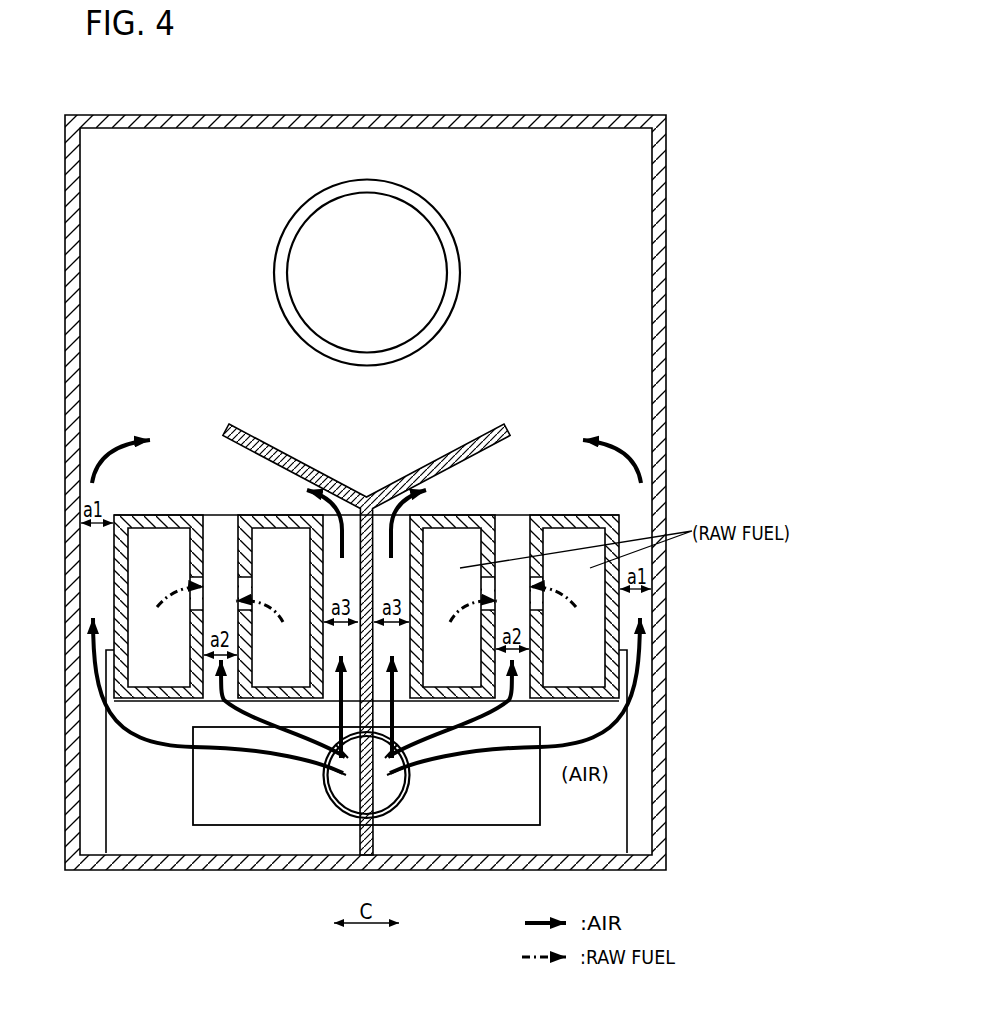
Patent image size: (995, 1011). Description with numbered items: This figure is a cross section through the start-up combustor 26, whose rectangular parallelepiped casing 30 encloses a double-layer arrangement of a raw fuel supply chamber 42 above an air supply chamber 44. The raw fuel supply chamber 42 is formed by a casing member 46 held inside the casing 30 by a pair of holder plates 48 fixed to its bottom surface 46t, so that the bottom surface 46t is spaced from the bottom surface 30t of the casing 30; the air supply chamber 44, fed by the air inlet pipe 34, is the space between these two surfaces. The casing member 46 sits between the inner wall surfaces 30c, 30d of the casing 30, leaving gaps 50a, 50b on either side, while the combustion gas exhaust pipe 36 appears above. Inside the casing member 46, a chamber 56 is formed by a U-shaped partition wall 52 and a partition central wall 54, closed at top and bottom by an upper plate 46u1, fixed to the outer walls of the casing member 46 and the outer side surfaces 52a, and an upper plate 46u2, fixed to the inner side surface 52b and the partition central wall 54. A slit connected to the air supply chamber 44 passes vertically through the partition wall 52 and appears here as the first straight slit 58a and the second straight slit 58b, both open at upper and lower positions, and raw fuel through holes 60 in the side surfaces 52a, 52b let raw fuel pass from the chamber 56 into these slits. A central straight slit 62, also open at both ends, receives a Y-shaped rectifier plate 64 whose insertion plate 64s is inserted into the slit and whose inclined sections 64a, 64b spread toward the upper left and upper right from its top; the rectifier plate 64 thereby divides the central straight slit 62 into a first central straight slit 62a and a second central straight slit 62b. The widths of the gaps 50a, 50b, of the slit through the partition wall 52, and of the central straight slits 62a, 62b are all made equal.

The start-up combustor 26 is at (619, 69).
The casing 30 is at (273, 102).
The inner wall surface 30c is at (653, 642).
The inner wall surface 30d is at (73, 650).
The bottom surface of the casing 30t is at (136, 853).
The air inlet pipe 34 is at (327, 779).
The combustion gas exhaust pipe 36 is at (427, 250).
The raw fuel supply chamber 42 is at (218, 478).
The air supply chamber 44 is at (167, 830).
The casing member 46 is at (622, 497).
The bottom surface of the casing member 46t is at (153, 702).
The upper plate 46u1 is at (143, 520).
The upper plate 46u2 is at (273, 523).
The holder plates 48 is at (628, 805).
The gap 50a is at (640, 604).
The gap 50b is at (88, 580).
The partition wall 52 is at (218, 555).
The outer side surface of the partition wall 52a is at (175, 520).
The inner side surface of the partition wall 52b is at (253, 548).
The partition central wall 54 is at (514, 587).
The chamber 56 is at (148, 552).
The first straight slit 58a is at (518, 694).
The second straight slit 58b is at (218, 700).
The raw fuel through holes 60 is at (531, 598).
The central straight slit 62 is at (410, 425).
The first central straight slit 62a is at (393, 523).
The second central straight slit 62b is at (340, 523).
The rectifier plate 64 is at (245, 420).
The inclined section 64a is at (492, 422).
The inclined section 64b is at (278, 443).
The insertion plate 64s is at (374, 828).